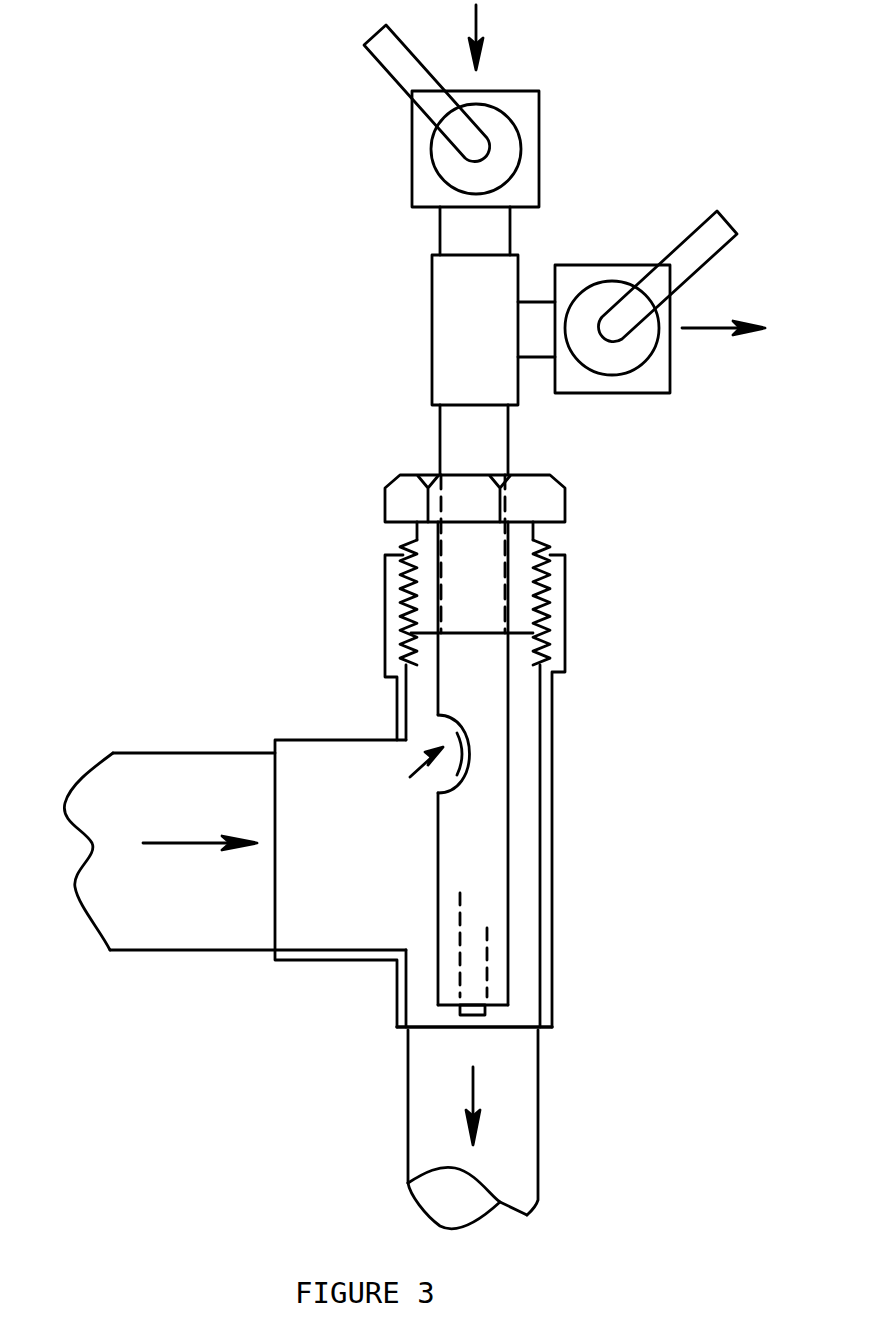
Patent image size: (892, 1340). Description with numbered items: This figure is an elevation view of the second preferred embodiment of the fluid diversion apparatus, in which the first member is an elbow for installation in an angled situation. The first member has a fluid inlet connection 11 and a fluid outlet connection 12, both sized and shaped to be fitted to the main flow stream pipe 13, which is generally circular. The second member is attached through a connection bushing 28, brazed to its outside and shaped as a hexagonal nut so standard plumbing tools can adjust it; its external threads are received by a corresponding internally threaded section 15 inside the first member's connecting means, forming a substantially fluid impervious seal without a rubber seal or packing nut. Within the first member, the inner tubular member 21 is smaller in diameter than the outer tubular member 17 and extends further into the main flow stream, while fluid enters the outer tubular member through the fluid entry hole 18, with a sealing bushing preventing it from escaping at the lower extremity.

The fluid inlet connection 11 is at (273, 770).
The fluid outlet connection 12 is at (427, 1030).
The main flow stream pipe 13 is at (538, 1148).
The internally threaded section 15 is at (585, 597).
The outer tubular member 17 is at (508, 852).
The fluid entry hole 18 is at (450, 732).
The inner tubular member 21 is at (487, 960).
The connection bushing 28 is at (530, 463).